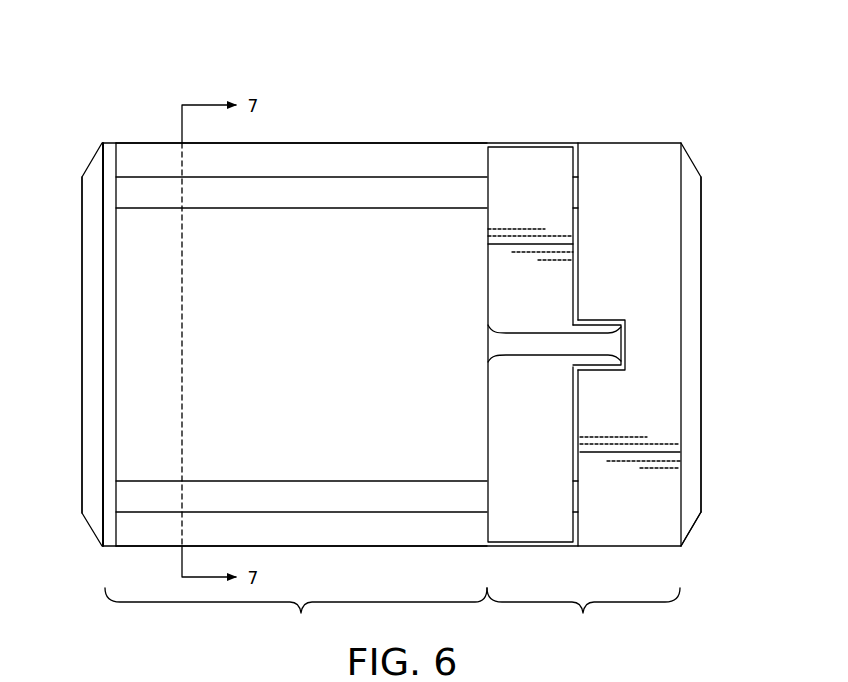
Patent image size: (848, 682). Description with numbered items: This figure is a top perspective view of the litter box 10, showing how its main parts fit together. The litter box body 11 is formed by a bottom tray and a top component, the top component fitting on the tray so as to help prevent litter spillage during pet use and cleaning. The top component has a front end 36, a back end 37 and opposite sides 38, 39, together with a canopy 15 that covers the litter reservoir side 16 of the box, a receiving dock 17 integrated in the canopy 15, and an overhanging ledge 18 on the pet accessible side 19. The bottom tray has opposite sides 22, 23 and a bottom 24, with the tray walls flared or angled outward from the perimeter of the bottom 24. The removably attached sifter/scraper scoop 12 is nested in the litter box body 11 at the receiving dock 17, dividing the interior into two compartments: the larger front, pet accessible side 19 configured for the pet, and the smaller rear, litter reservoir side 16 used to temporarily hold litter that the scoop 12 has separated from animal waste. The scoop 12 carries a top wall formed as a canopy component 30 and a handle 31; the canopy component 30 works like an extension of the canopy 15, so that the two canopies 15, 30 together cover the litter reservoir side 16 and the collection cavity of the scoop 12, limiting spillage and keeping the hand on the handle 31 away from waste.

The litter box 10 is at (158, 74).
The litter box body 11 is at (690, 556).
The sifter/scraper scoop 12 is at (530, 166).
The canopy 15 is at (638, 156).
The litter reservoir side 16 is at (583, 614).
The receiving dock 17 is at (606, 321).
The overhanging ledge 18 is at (111, 152).
The pet accessible side 19 is at (296, 614).
The side of bottom tray 22 is at (292, 202).
The side of bottom tray 23 is at (292, 508).
The bottom 24 is at (292, 341).
The canopy component 30 is at (522, 473).
The handle 31 is at (547, 343).
The front end 36 is at (95, 331).
The back end 37 is at (692, 341).
The side of top component 38 is at (292, 170).
The side of top component 39 is at (292, 541).